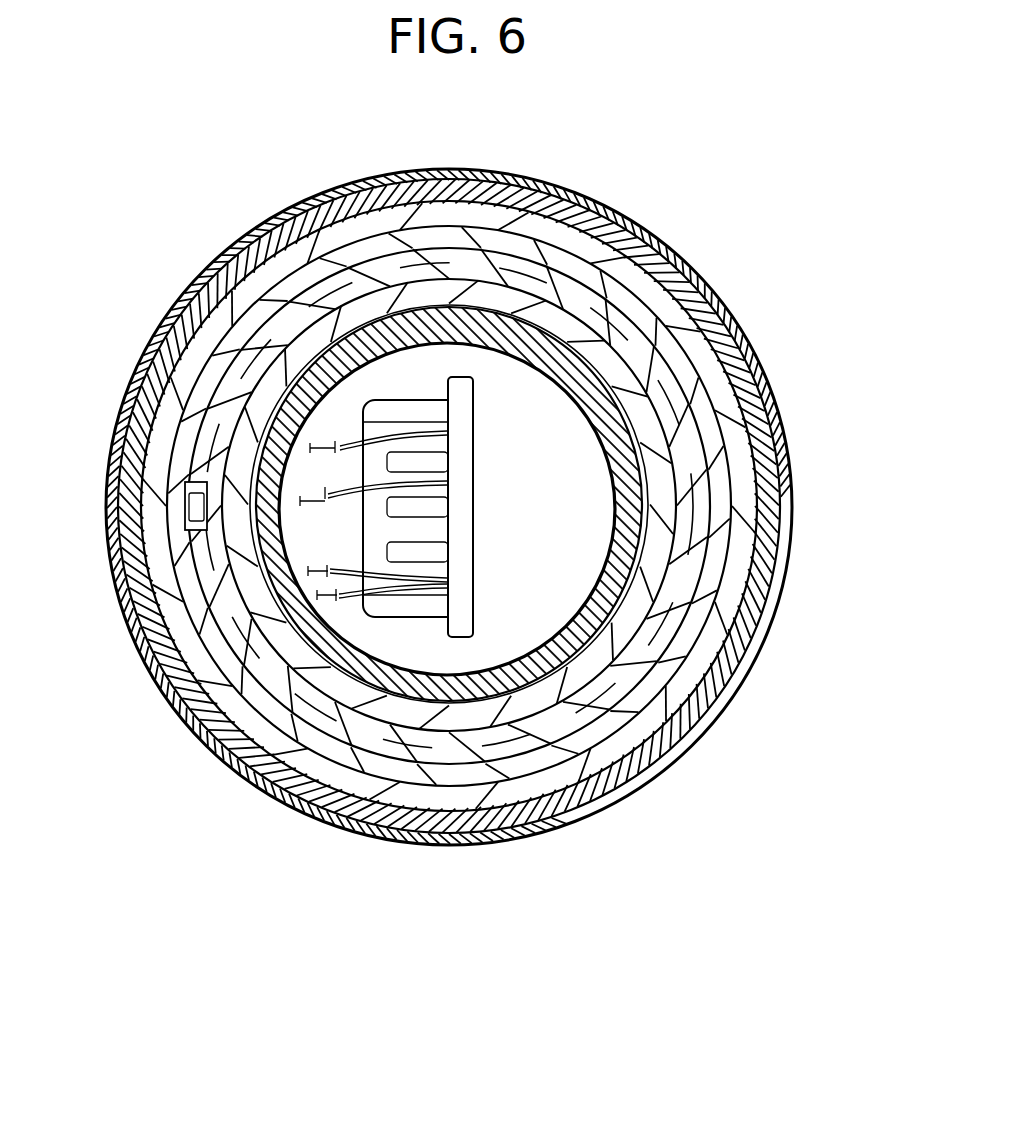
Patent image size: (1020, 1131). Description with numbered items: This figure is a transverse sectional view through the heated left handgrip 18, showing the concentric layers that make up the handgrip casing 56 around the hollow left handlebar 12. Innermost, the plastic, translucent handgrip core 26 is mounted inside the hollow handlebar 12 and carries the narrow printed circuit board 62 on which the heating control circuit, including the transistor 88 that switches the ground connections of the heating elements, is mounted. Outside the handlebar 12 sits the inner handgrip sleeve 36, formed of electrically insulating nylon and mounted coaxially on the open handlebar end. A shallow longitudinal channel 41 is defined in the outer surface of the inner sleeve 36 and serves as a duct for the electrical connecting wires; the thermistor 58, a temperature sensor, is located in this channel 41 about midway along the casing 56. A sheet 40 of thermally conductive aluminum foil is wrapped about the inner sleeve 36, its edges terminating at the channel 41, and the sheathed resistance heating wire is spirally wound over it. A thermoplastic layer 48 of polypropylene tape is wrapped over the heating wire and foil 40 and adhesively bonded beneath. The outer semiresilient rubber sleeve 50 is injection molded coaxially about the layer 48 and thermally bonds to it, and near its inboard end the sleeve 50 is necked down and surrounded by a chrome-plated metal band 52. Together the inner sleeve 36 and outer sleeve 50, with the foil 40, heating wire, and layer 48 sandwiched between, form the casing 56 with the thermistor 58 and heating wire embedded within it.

The left handlebar 12 is at (686, 483).
The left handgrip 18 is at (450, 532).
The handgrip core 26 is at (572, 398).
The inner handgrip sleeve 36 is at (717, 537).
The aluminum foil sheet 40 is at (453, 790).
The channel 41 is at (193, 530).
The thermoplastic layer 48 is at (332, 813).
The outer sleeve 50 is at (517, 827).
The metal band 52 is at (605, 810).
The handgrip casing 56 is at (424, 532).
The thermistor 58 is at (185, 508).
The printed circuit board 62 is at (480, 507).
The transistor 88 is at (418, 532).